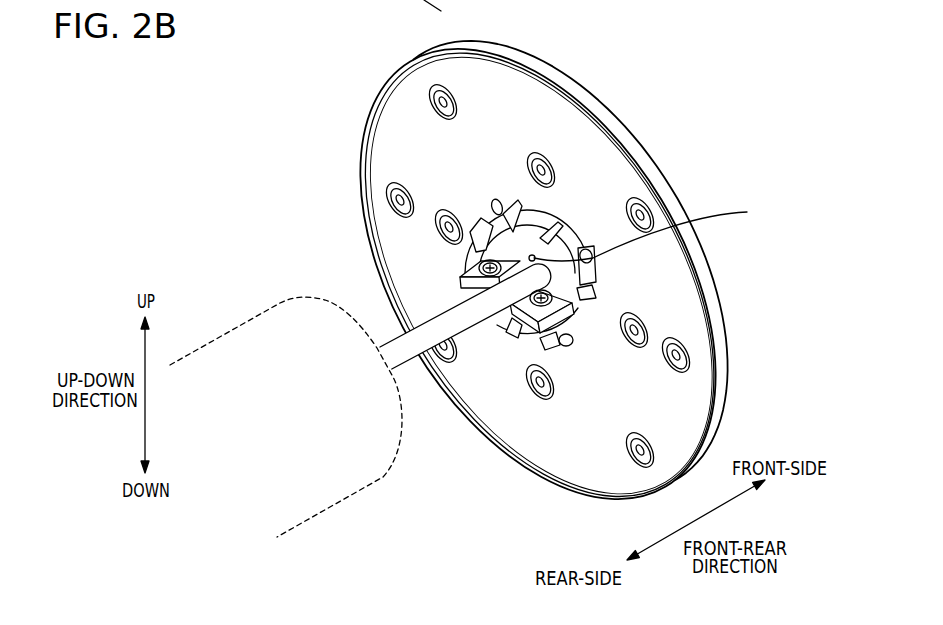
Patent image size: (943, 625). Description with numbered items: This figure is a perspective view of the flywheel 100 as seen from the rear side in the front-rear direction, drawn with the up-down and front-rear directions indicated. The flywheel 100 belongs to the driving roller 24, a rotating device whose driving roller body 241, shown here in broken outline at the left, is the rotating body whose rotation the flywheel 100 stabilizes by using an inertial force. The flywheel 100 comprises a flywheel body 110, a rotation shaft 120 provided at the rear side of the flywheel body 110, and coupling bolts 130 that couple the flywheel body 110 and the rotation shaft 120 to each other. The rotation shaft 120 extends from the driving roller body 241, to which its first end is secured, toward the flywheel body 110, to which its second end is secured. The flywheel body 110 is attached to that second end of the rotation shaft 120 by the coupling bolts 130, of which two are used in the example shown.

The driving roller 24 is at (213, 170).
The driving roller body 241 is at (250, 335).
The flywheel 100 is at (333, 169).
The flywheel body 110 is at (655, 146).
The rotation shaft 120 is at (417, 388).
The coupling bolts 130 is at (628, 271).